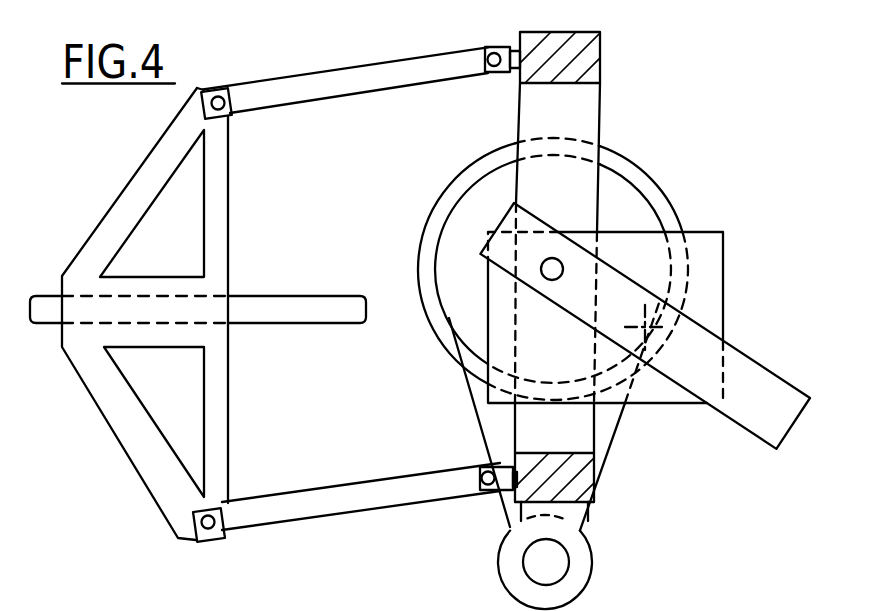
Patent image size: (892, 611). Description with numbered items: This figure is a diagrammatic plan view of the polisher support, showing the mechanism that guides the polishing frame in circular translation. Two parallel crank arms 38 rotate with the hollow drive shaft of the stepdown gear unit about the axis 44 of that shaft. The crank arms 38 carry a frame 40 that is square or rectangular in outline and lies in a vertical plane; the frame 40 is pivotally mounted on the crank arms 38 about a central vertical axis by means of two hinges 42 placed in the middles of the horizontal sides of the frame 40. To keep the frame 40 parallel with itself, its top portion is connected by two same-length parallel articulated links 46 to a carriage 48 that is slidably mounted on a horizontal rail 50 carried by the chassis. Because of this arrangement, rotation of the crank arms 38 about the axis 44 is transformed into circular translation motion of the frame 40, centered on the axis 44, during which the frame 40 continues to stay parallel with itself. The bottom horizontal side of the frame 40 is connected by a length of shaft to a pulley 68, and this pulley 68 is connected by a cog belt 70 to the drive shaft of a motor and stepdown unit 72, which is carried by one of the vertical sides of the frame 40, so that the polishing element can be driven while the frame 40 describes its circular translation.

The crank arms 38 is at (797, 390).
The frame 40 is at (603, 58).
The hinges 42 is at (561, 278).
The axis 44 is at (650, 330).
The articulated links 46 is at (352, 72).
The carriage 48 is at (98, 237).
The horizontal rail 50 is at (306, 295).
The pulley 68 is at (652, 178).
The cog belt 70 is at (605, 471).
The motor and stepdown unit 72 is at (592, 551).